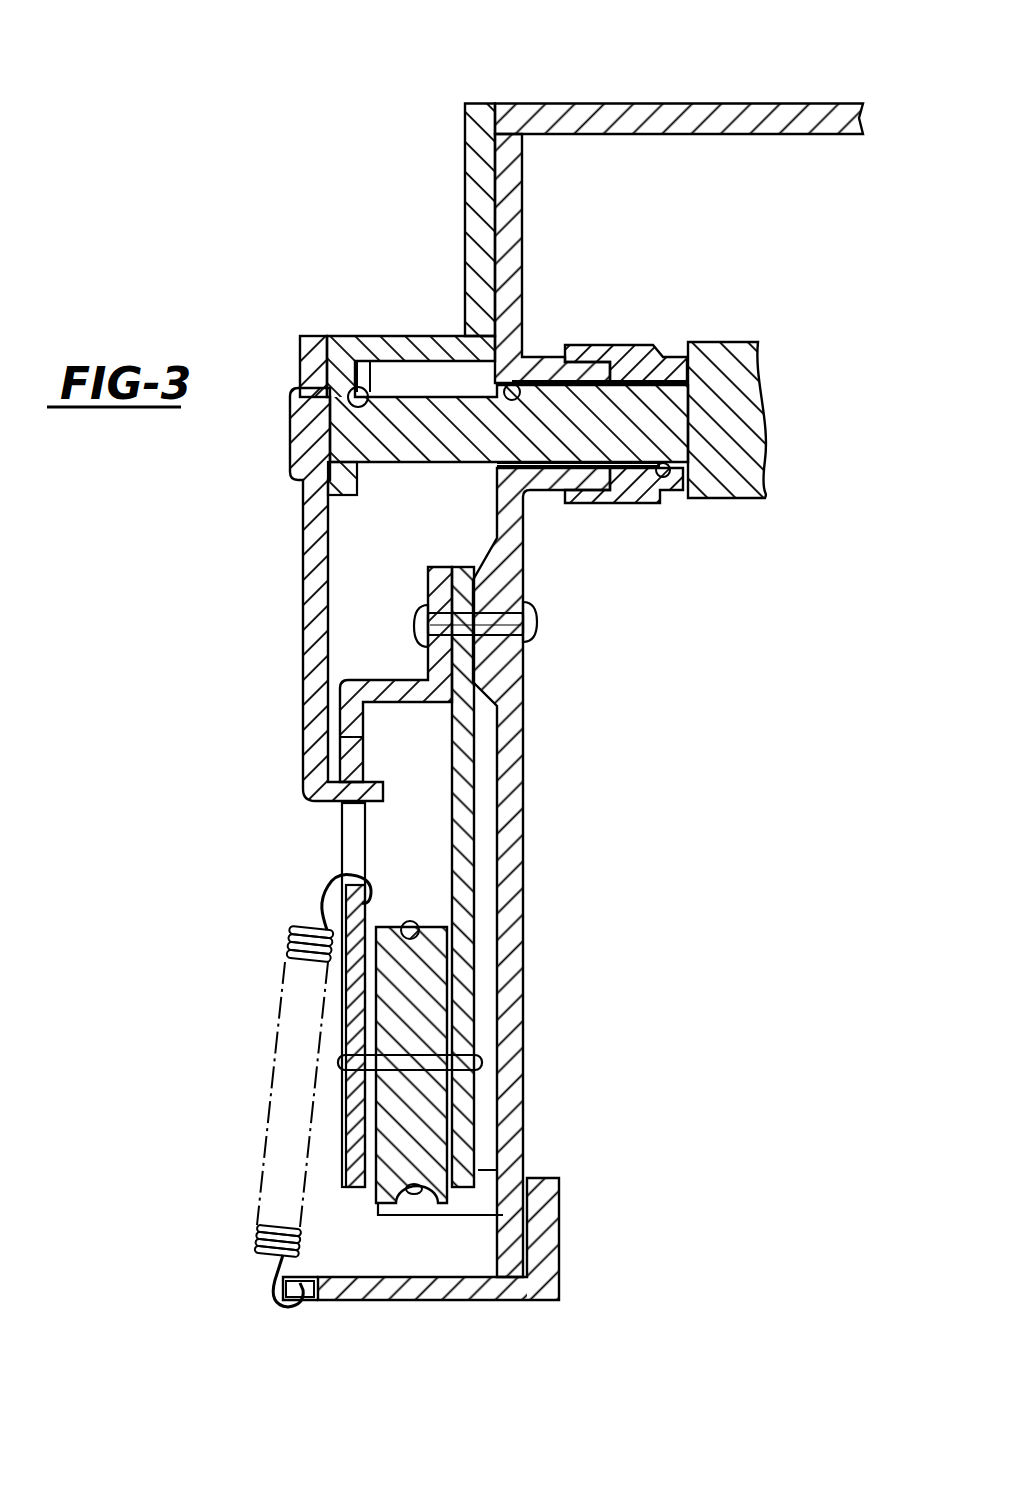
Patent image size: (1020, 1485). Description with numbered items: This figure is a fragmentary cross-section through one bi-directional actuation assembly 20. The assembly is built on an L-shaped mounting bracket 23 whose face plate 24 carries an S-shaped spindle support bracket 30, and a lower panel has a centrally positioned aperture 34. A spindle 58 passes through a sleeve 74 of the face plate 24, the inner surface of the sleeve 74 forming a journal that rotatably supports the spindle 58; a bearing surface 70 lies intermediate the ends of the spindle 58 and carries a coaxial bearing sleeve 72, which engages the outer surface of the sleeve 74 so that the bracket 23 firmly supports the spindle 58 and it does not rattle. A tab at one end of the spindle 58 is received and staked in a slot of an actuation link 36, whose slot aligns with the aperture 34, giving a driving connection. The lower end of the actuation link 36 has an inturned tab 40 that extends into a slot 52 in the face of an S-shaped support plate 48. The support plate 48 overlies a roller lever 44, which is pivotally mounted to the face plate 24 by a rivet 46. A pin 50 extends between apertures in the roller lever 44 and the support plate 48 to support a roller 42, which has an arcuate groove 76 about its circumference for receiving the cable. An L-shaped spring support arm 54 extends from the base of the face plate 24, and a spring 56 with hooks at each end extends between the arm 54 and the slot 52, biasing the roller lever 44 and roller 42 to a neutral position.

The actuation assembly 20 is at (277, 271).
The L-shaped mounting bracket 23 is at (672, 103).
The face plate 24 is at (513, 217).
The spindle support bracket 30 is at (467, 168).
The aperture 34 is at (352, 402).
The actuation link 36 is at (310, 572).
The inturned tab 40 is at (382, 797).
The roller 42 is at (437, 982).
The roller lever 44 is at (517, 845).
The rivet 46 is at (537, 622).
The support plate 48 is at (405, 700).
The pin 50 is at (333, 1057).
The slot 52 is at (350, 838).
The spring support arm 54 is at (500, 1290).
The spring 56 is at (255, 1240).
The spindle 58 is at (754, 362).
The bearing surface 70 is at (514, 390).
The bearing sleeve 72 is at (665, 485).
The sleeve 74 is at (553, 363).
The arcuate groove 76 is at (413, 1188).